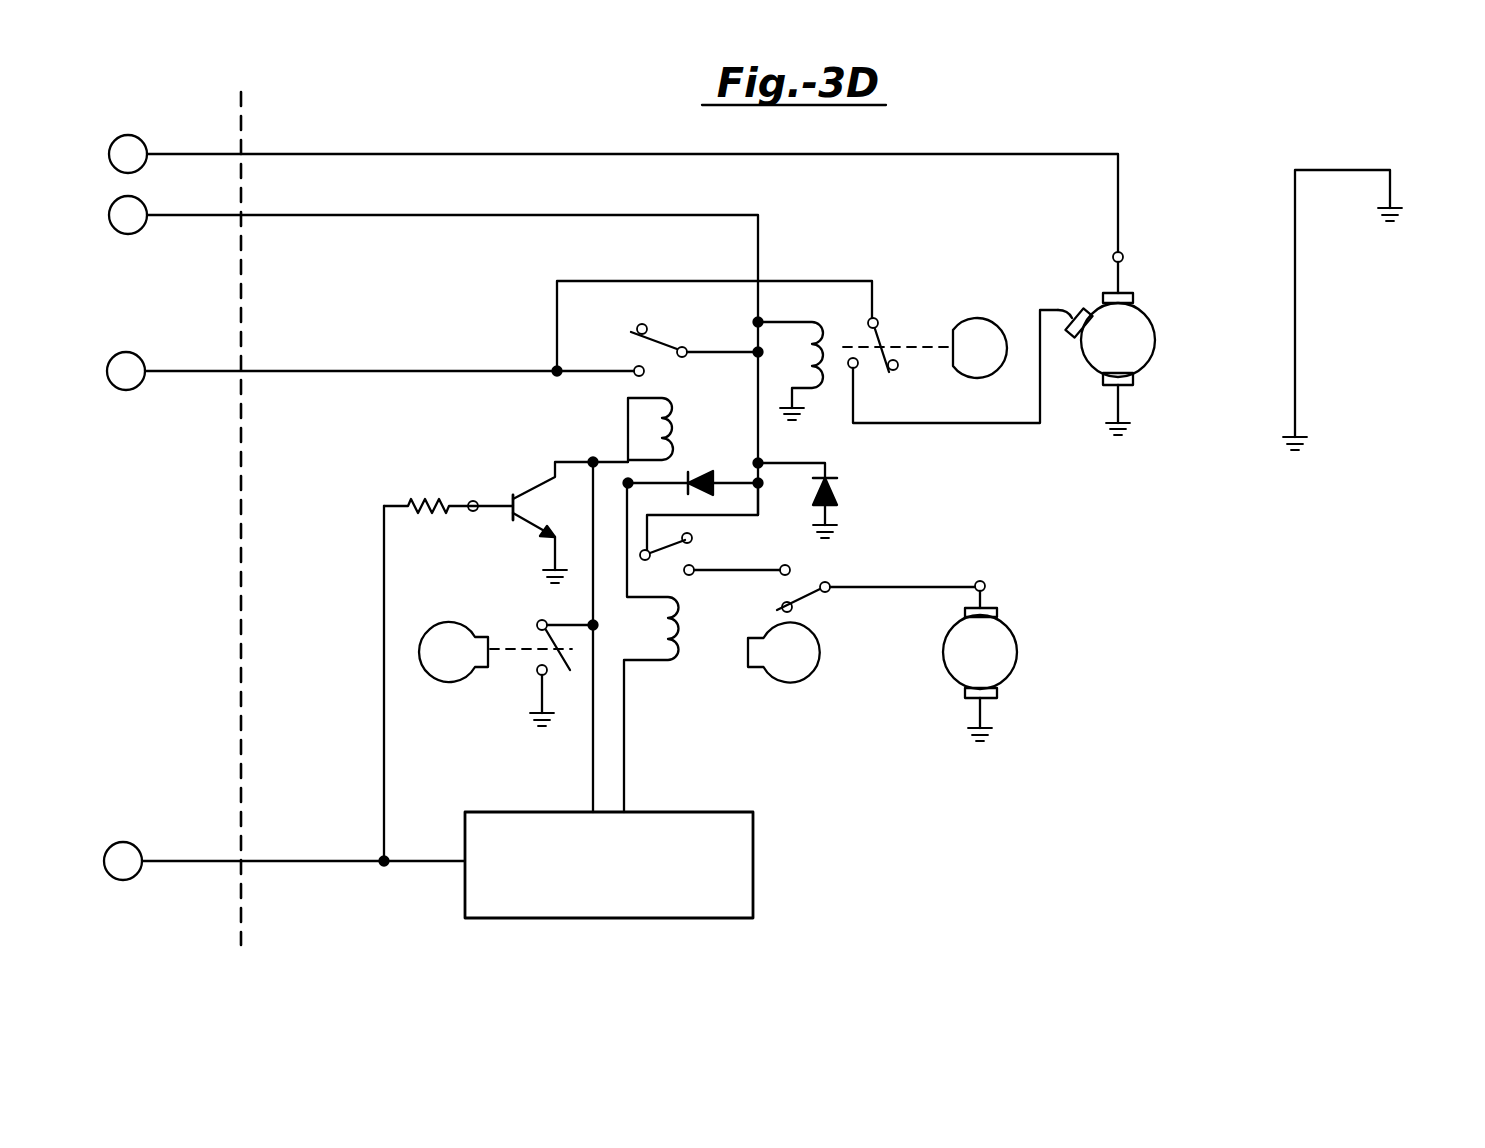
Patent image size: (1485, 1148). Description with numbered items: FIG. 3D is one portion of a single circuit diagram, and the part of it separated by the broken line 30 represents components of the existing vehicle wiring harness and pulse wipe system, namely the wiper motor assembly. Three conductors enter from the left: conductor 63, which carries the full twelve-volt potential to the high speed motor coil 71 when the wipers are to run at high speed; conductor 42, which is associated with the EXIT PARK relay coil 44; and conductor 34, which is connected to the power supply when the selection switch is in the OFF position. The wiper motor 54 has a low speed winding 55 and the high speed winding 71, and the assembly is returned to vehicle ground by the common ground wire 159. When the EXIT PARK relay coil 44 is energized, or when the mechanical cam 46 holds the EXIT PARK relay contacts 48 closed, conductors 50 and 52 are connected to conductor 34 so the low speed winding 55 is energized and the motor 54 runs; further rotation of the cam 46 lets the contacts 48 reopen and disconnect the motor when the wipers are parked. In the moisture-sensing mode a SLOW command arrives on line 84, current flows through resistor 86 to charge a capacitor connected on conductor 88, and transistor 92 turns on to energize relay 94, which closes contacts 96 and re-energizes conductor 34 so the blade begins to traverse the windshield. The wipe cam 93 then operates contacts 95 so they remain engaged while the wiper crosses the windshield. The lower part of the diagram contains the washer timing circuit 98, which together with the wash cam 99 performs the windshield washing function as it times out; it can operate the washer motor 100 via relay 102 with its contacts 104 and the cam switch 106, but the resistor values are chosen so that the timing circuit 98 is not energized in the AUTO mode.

The conductor 63 is at (142, 138).
The conductor 42 is at (145, 207).
The conductor 34 is at (130, 352).
The broken line 30 is at (244, 306).
The conductor 50 is at (788, 281).
The contacts 96 is at (657, 340).
The EXIT PARK relay coil 44 is at (813, 388).
The EXIT PARK relay contacts 48 is at (880, 318).
The conductor 52 is at (897, 423).
The mechanical cam 46 is at (955, 327).
The low speed winding 55 is at (1083, 312).
The high speed motor coil 71 is at (1122, 292).
The wiper motor 54 is at (1140, 318).
The ground wire 159 is at (1295, 390).
The relay 94 is at (673, 452).
The transistor 92 is at (523, 495).
The conductor 88 is at (470, 501).
The resistor 86 is at (425, 500).
The line 84 is at (384, 582).
The wipe cam 93 is at (425, 628).
The contacts 95 is at (540, 676).
The relay 102 is at (665, 662).
The contacts 104 is at (693, 543).
The cam switch 106 is at (803, 598).
The cam 99 is at (820, 660).
The washer motor 100 is at (1010, 630).
The timing circuit 98 is at (755, 876).